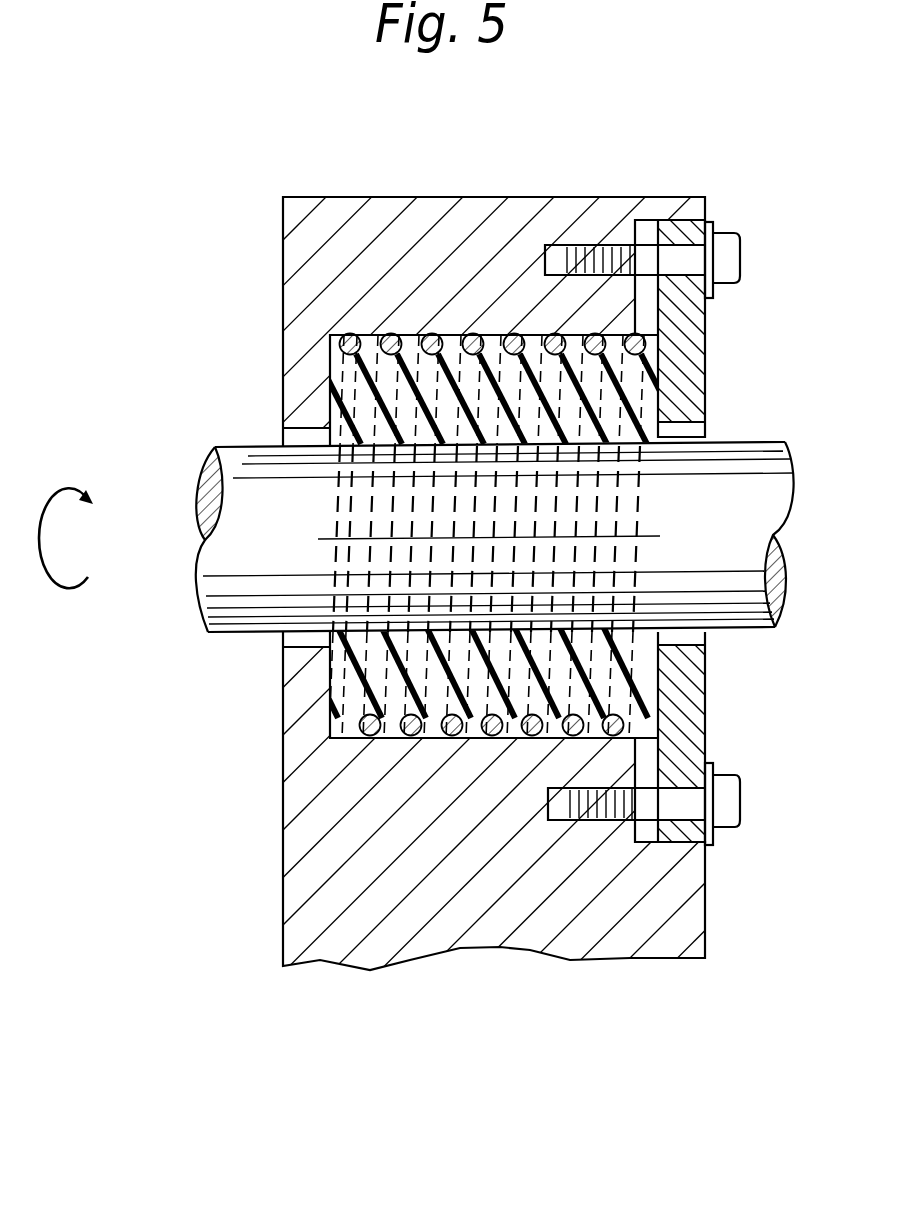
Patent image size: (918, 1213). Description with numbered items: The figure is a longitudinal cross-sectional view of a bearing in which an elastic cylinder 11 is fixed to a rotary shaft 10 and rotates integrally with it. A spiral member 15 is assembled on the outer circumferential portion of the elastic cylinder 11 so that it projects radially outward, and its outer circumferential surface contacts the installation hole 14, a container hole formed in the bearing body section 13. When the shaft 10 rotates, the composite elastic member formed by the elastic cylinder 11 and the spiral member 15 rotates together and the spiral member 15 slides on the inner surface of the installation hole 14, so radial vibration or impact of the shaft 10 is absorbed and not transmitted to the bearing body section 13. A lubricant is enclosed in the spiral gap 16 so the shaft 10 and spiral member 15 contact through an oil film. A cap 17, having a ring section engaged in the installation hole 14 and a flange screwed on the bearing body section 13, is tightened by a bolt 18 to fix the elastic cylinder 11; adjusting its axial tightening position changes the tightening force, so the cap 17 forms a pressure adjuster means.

The rotary shaft 10 is at (232, 628).
The elastic cylinder 11 is at (337, 712).
The bearing body section 13 is at (468, 908).
The installation hole 14 is at (373, 335).
The spiral member 15 is at (443, 335).
The spiral gap 16 is at (505, 335).
The cap 17 is at (683, 378).
The bolt 18 is at (668, 262).